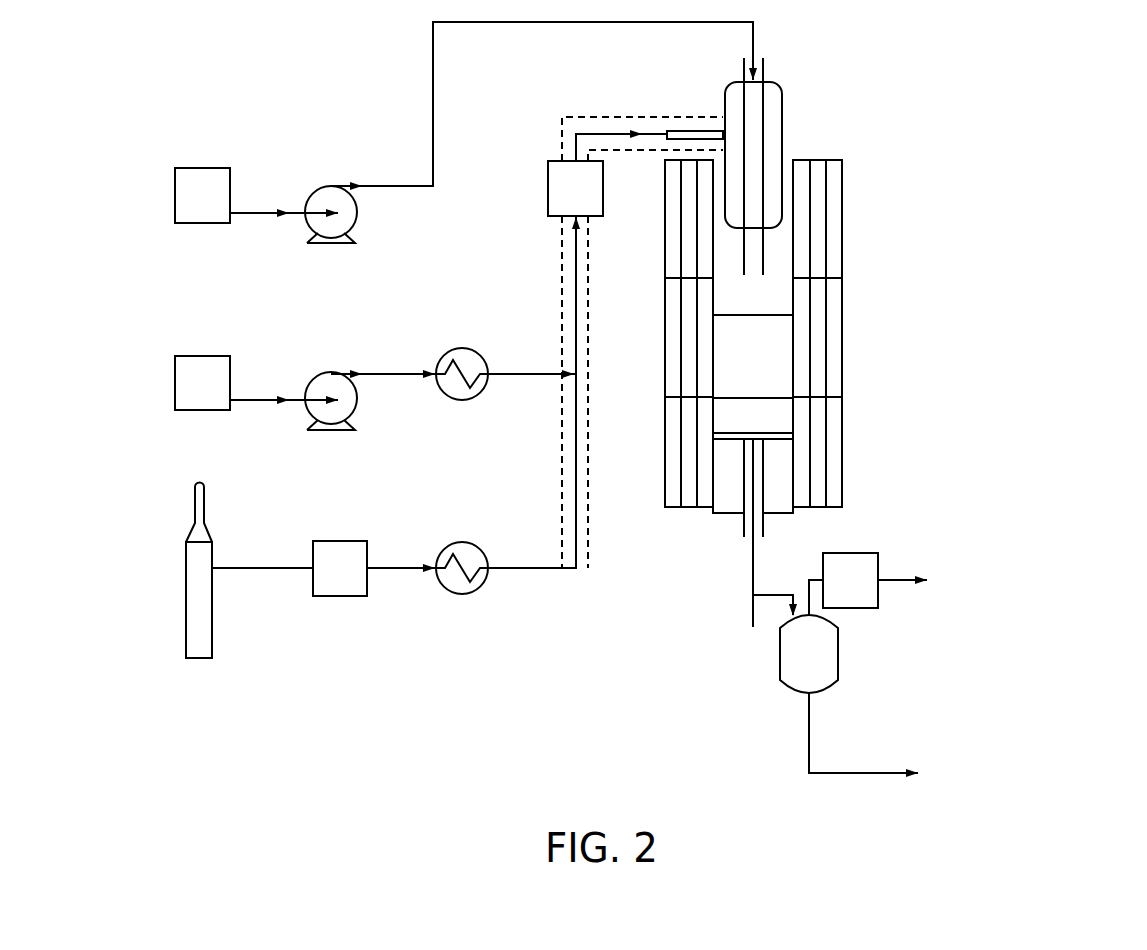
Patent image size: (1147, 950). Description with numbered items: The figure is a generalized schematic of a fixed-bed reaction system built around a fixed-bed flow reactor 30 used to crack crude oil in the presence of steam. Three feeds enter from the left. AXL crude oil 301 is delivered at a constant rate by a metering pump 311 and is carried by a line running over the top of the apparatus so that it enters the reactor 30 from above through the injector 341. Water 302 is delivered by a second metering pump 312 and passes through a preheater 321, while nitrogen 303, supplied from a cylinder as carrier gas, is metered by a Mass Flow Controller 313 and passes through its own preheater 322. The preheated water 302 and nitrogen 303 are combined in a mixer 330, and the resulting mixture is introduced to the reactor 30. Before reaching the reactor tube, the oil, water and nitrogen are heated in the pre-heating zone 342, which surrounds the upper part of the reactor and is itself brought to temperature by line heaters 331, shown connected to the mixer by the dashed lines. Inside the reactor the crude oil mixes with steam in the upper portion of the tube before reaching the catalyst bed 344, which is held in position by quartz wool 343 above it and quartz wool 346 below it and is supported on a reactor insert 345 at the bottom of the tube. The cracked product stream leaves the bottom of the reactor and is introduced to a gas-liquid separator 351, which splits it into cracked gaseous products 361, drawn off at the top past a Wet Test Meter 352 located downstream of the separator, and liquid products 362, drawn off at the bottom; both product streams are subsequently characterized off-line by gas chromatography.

The fixed-bed reactor 30 is at (1055, 120).
The AXL crude oil 301 is at (200, 168).
The water 302 is at (203, 356).
The nitrogen 303 is at (195, 503).
The metering pump 311 is at (330, 186).
The metering pump 312 is at (330, 372).
The Mass Flow Controller 313 is at (340, 541).
The preheater 321 is at (462, 348).
The preheater 322 is at (460, 542).
The mixer 330 is at (548, 188).
The line heaters 331 is at (595, 112).
The injector 341 is at (766, 108).
The pre-heating zone 342 is at (783, 280).
The quartz wool 343 is at (783, 330).
The catalyst bed 344 is at (783, 412).
The reactor insert 345 is at (753, 588).
The quartz wool 346 is at (793, 437).
The gas-liquid separator 351 is at (838, 652).
The Wet Test Meter 352 is at (863, 553).
The cracked gaseous products 361 is at (918, 583).
The liquid products 362 is at (863, 773).